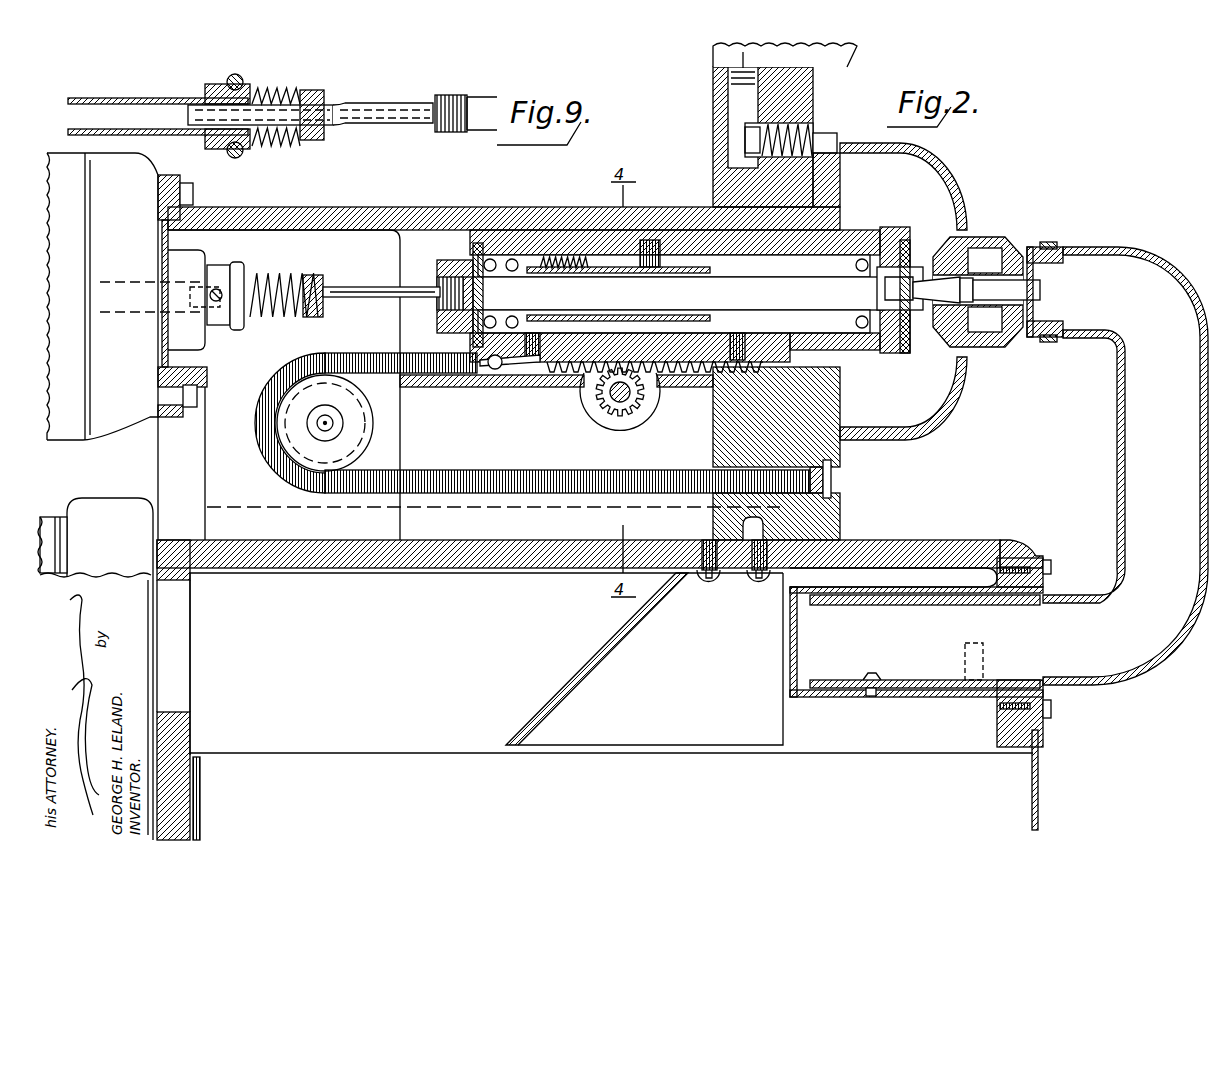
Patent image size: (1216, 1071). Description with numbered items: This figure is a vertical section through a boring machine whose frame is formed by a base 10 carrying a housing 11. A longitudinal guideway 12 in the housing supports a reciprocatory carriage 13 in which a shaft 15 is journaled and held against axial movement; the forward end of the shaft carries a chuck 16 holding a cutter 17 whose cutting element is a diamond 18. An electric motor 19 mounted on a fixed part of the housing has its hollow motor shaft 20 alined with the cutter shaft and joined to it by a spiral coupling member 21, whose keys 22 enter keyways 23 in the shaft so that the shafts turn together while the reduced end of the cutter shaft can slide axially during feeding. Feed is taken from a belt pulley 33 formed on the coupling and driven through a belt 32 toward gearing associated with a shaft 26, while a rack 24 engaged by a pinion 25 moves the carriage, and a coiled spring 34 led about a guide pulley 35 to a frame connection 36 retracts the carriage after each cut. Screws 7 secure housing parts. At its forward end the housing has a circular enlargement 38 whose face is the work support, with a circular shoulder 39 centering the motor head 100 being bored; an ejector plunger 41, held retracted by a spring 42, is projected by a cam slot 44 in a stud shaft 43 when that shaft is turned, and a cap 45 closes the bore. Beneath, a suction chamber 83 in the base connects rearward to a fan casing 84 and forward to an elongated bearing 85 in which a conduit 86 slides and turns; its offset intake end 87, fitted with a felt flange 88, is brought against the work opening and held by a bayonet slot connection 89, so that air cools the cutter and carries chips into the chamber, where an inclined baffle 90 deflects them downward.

In FIG. 2, the screw 7 is at (741, 548).
In FIG. 2, the base 10 is at (885, 540).
In FIG. 2, the housing 11 is at (462, 210).
In FIG. 2, the longitudinal guideway 12 is at (412, 322).
In FIG. 2, the carriage 13 is at (844, 290).
In FIG. 9, the shaft 15 is at (478, 112).
In FIG. 2, the shaft 15 is at (661, 296).
In FIG. 2, the chuck 16 is at (932, 312).
In FIG. 2, the cutter 17 is at (1027, 292).
In FIG. 2, the diamond 18 is at (1037, 277).
In FIG. 2, the electric motor 19 is at (127, 296).
In FIG. 9, the motor shaft 20 is at (155, 98).
In FIG. 2, the motor shaft 20 is at (174, 282).
In FIG. 9, the coupling member 21 is at (278, 140).
In FIG. 2, the coupling member 21 is at (278, 275).
In FIG. 9, the keys 22 is at (323, 125).
In FIG. 2, the keys 22 is at (313, 290).
In FIG. 9, the keyways 23 is at (328, 105).
In FIG. 2, the keyways 23 is at (356, 287).
In FIG. 2, the rack 24 is at (660, 380).
In FIG. 2, the gear 25 is at (626, 416).
In FIG. 2, the shaft 26 is at (612, 398).
In FIG. 9, the belt 32 is at (235, 74).
In FIG. 2, the belt 32 is at (231, 326).
In FIG. 9, the belt pulley 33 is at (246, 85).
In FIG. 2, the belt pulley 33 is at (247, 270).
In FIG. 2, the coiled spring 34 is at (460, 472).
In FIG. 2, the guide pulley 35 is at (378, 430).
In FIG. 2, the spring connection 36 is at (832, 489).
In FIG. 2, the circular enlargement 38 is at (713, 90).
In FIG. 2, the circular shoulder 39 is at (843, 155).
In FIG. 2, the plunger 41 is at (818, 138).
In FIG. 2, the spring 42 is at (787, 125).
In FIG. 2, the stud shaft 43 is at (737, 75).
In FIG. 2, the cam slot 44 is at (745, 138).
In FIG. 2, the cap 45 is at (838, 55).
In FIG. 2, the suction chamber 83 is at (595, 690).
In FIG. 2, the casing 84 is at (95, 669).
In FIG. 2, the elongated bearing 85 is at (838, 690).
In FIG. 2, the conduit 86 is at (1072, 595).
In FIG. 2, the intake end 87 is at (1060, 247).
In FIG. 2, the flange 88 is at (1040, 312).
In FIG. 2, the bayonet slot connection 89 is at (965, 655).
In FIG. 2, the inclined baffle 90 is at (556, 690).
In FIG. 2, the motor head 100 is at (968, 200).